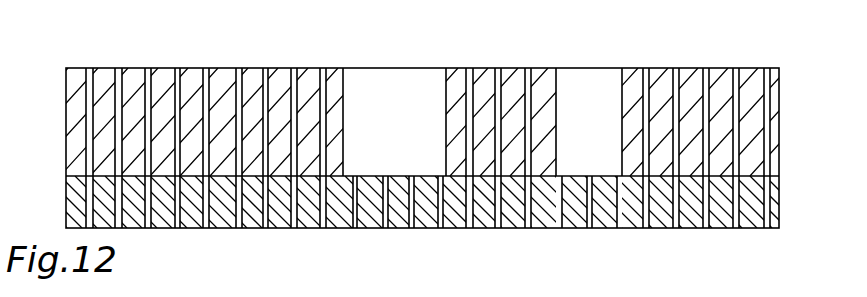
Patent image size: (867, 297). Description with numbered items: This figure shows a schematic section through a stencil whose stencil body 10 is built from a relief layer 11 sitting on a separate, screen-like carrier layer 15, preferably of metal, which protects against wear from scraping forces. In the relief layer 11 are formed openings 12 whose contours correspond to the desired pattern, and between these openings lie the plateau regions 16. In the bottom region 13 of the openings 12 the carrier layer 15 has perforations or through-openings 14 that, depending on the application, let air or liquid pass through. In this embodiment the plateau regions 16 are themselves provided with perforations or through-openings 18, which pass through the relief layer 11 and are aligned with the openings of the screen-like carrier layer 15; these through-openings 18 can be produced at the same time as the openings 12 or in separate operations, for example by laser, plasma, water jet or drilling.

The stencil body 10 is at (528, 55).
The relief layer 11 is at (690, 100).
The openings 12 is at (375, 103).
The bottom region 13 is at (368, 178).
The through-openings 14 is at (388, 200).
The carrier layer 15 is at (668, 212).
The plateau regions 16 is at (304, 67).
The through-openings 18 is at (134, 68).